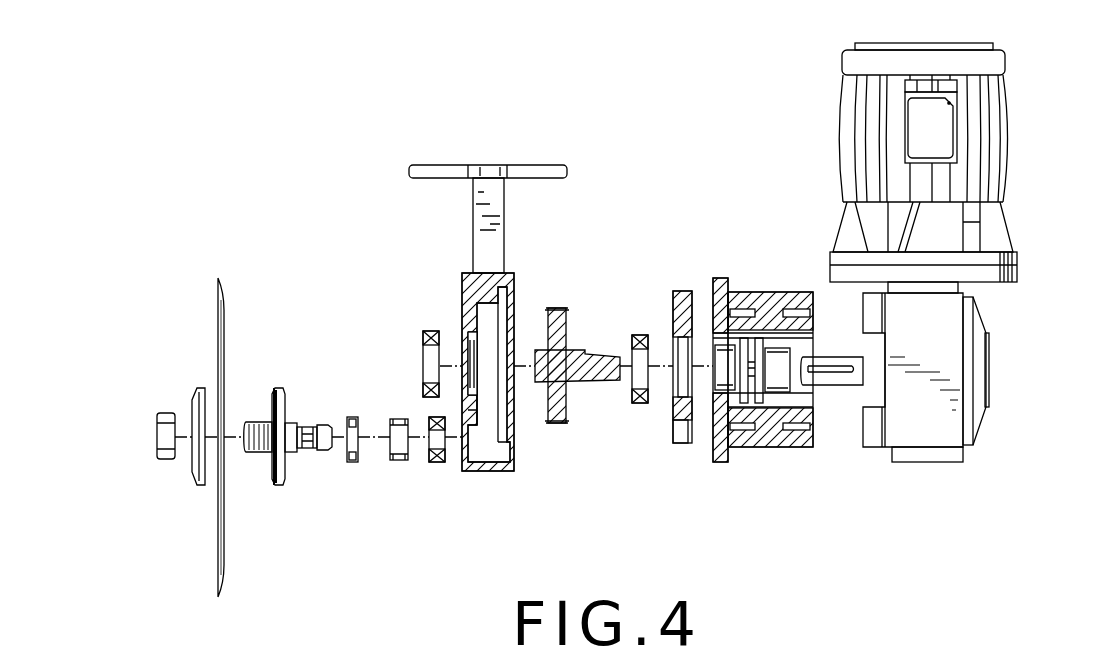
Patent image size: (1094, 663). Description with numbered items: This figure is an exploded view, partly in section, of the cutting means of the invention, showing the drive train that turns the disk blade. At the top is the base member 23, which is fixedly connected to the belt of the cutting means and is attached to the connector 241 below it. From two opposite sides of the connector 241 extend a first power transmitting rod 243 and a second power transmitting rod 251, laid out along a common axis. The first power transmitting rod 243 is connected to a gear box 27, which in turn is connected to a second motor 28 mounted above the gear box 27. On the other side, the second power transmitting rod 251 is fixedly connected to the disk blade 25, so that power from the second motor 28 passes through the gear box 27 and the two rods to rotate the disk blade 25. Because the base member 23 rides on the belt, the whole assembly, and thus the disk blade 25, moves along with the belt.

The base member 23 is at (487, 170).
The disk blade 25 is at (222, 530).
The second power transmitting rod 251 is at (305, 453).
The connector 241 is at (490, 468).
The first power transmitting rod 243 is at (582, 380).
The gear box 27 is at (927, 428).
The second motor 28 is at (998, 137).